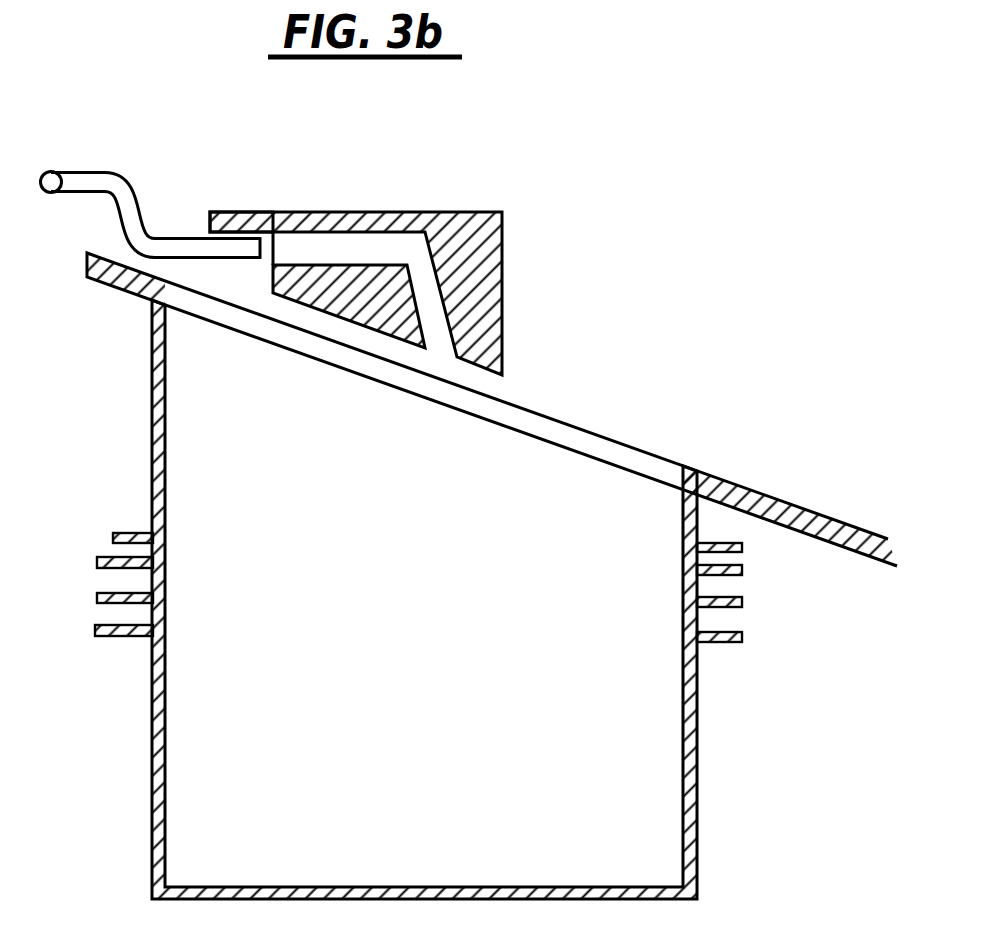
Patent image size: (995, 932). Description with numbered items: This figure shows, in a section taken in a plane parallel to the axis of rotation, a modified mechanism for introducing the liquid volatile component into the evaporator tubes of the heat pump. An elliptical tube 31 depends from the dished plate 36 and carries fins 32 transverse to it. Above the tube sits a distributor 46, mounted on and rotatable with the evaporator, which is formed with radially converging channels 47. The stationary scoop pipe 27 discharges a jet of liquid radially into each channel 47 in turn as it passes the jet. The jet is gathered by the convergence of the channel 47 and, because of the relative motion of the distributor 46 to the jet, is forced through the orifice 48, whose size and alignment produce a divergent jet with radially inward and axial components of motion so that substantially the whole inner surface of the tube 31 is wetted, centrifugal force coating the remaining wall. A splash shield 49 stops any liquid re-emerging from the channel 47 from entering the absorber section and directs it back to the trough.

The stationary scoop pipe 27 is at (84, 170).
The elliptical tube 31 is at (152, 830).
The fins 32 is at (95, 618).
The dished plate 36 is at (803, 530).
The distributor 46 is at (499, 273).
The channel 47 is at (310, 246).
The orifice 48 is at (435, 332).
The splash shield 49 is at (222, 211).